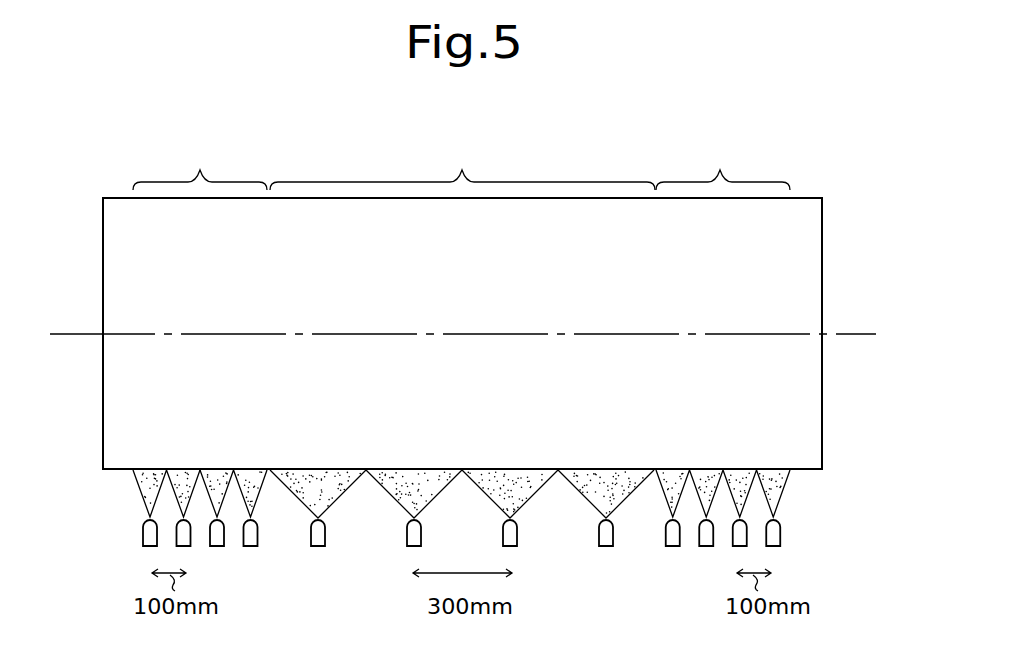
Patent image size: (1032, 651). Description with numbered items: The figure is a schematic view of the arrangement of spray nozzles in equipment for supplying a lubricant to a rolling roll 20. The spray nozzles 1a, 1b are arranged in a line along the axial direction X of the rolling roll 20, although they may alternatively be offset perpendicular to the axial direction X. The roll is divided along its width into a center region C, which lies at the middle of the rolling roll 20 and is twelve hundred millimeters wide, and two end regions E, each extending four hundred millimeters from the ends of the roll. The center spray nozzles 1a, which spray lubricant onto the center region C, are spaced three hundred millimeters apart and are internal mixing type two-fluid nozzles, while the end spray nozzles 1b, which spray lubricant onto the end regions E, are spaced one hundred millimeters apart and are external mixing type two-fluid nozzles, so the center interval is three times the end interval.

The rolling roll 20 is at (822, 237).
The axial direction X is at (850, 334).
The spray nozzles 1a is at (518, 538).
The spray nozzles 1b is at (219, 540).
The end regions E is at (461, 165).
The center region C is at (462, 165).